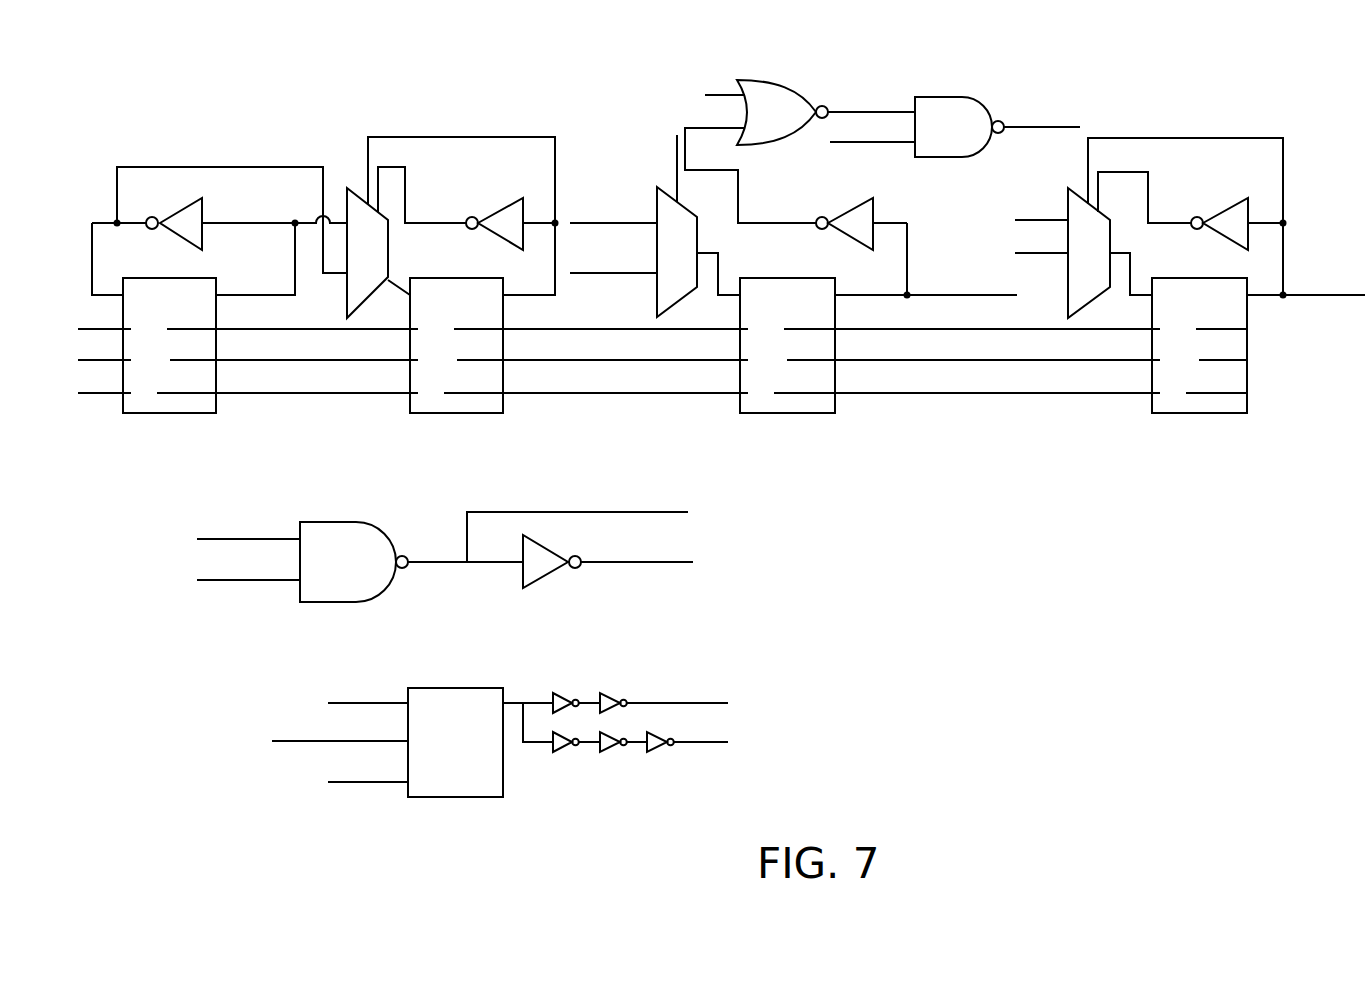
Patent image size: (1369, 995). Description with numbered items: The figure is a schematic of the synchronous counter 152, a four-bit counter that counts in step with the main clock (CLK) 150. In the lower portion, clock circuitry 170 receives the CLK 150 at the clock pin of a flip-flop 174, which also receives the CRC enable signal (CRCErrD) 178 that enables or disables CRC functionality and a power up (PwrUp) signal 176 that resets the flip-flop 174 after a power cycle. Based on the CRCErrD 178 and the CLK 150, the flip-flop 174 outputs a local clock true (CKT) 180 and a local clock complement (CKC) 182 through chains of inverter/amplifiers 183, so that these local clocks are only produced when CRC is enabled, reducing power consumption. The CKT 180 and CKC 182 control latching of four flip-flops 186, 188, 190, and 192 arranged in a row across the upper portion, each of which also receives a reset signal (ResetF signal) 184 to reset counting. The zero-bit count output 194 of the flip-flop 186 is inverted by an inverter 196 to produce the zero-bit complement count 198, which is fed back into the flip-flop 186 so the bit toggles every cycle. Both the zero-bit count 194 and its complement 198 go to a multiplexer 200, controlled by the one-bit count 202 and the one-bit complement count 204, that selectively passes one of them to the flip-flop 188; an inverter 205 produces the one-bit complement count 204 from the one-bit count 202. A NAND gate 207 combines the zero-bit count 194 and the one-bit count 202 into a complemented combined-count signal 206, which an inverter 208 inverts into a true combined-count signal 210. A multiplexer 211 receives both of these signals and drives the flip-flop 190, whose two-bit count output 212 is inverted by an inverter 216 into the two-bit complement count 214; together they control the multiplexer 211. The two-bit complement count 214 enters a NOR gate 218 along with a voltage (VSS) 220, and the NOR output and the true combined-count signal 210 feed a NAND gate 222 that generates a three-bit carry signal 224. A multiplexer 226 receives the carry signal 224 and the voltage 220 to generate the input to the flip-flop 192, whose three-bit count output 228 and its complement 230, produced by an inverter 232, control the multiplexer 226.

The main clock (CLK) 150 is at (295, 745).
The synchronous counter 152 is at (160, 798).
The clock circuitry 170 is at (375, 843).
The flip-flop 174 is at (450, 799).
The power up (PwrUp) signal 176 is at (368, 786).
The CRC enable signal (CRCErrD) 178 is at (362, 672).
The local clock true (CKT) 180 is at (60, 312).
The local clock complement (CKC) 182 is at (32, 357).
The inverter/amplifiers 183 is at (606, 693).
The reset signal (ResetF signal) 184 is at (47, 414).
The flip-flop 186 is at (170, 413).
The flip-flop 188 is at (460, 413).
The flip-flop 190 is at (790, 413).
The flip-flop 192 is at (1200, 413).
The Count 0 194 is at (262, 275).
The inverter 196 is at (182, 242).
The CountF 0 198 is at (230, 128).
The multiplexer 200 is at (390, 242).
The Count 1 202 is at (518, 137).
The CountF 1 204 is at (407, 156).
The inverter 205 is at (502, 213).
The Count0and1F signal 206 is at (657, 280).
The NAND gate 207 is at (368, 602).
The inverter 208 is at (540, 580).
The Count0and1 signal 210 is at (628, 192).
The multiplexer 211 is at (699, 238).
The Count 2 212 is at (673, 150).
The CountF 2 214 is at (773, 187).
The inverter 216 is at (851, 240).
The NOR gate 218 is at (796, 91).
The voltage (VSS) 220 is at (687, 79).
The NAND gate 222 is at (974, 97).
The Count012F signal 224 is at (1062, 96).
The multiplexer 226 is at (1109, 237).
The Count 3 228 is at (1300, 298).
The CountF 3 230 is at (1150, 200).
The inverter 232 is at (1228, 240).